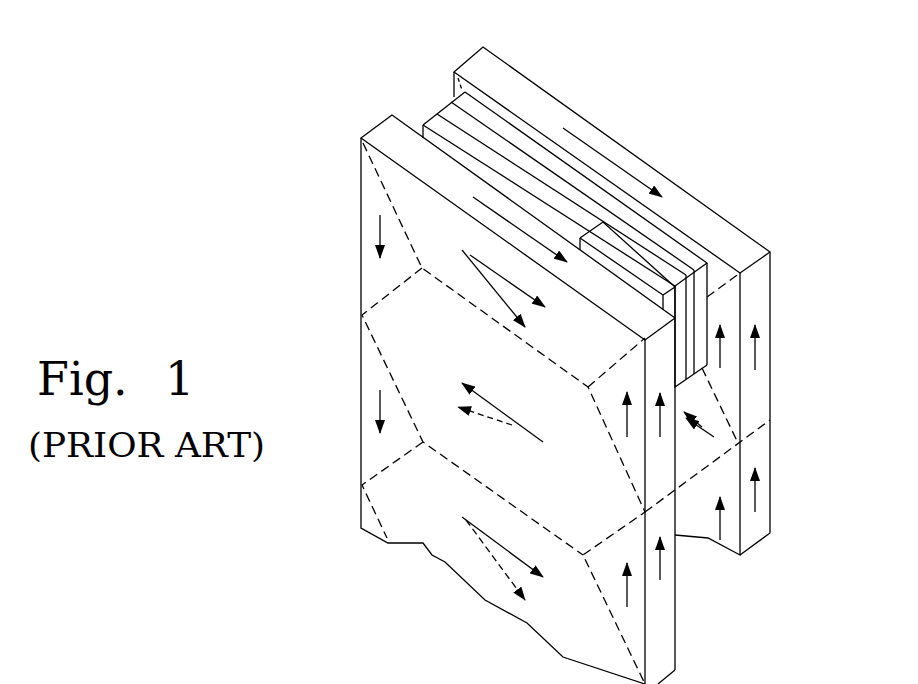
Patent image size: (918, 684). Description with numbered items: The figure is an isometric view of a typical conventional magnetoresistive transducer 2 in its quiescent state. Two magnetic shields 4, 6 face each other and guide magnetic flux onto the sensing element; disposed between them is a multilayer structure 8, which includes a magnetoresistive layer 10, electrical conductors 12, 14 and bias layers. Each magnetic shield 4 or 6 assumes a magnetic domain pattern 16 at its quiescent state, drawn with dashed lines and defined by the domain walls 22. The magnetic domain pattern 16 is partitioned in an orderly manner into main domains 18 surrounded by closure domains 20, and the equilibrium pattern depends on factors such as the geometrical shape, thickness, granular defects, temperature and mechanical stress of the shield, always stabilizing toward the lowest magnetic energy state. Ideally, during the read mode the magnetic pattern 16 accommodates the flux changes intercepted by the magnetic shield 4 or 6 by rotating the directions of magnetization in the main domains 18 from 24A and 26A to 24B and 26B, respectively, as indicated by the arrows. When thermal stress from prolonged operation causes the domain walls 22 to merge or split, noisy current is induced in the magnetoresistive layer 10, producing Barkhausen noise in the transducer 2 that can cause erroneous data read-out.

The magnetoresistive transducer 2 is at (224, 182).
The magnetic shield 4 is at (373, 130).
The magnetic shield 6 is at (478, 52).
The multilayer structure 8 is at (440, 112).
The magnetoresistive layer 10 is at (447, 102).
The electrical conductor 12 is at (423, 123).
The electrical conductor 14 is at (647, 277).
The magnetic domain pattern 16 is at (387, 292).
The main domain 18 is at (598, 360).
The closure domain 20 is at (362, 198).
The domain wall 22 is at (483, 310).
The direction of magnetization 24A is at (510, 275).
The direction of magnetization 24B is at (492, 277).
The direction of magnetization 26A is at (508, 412).
The direction of magnetization 26B is at (495, 428).